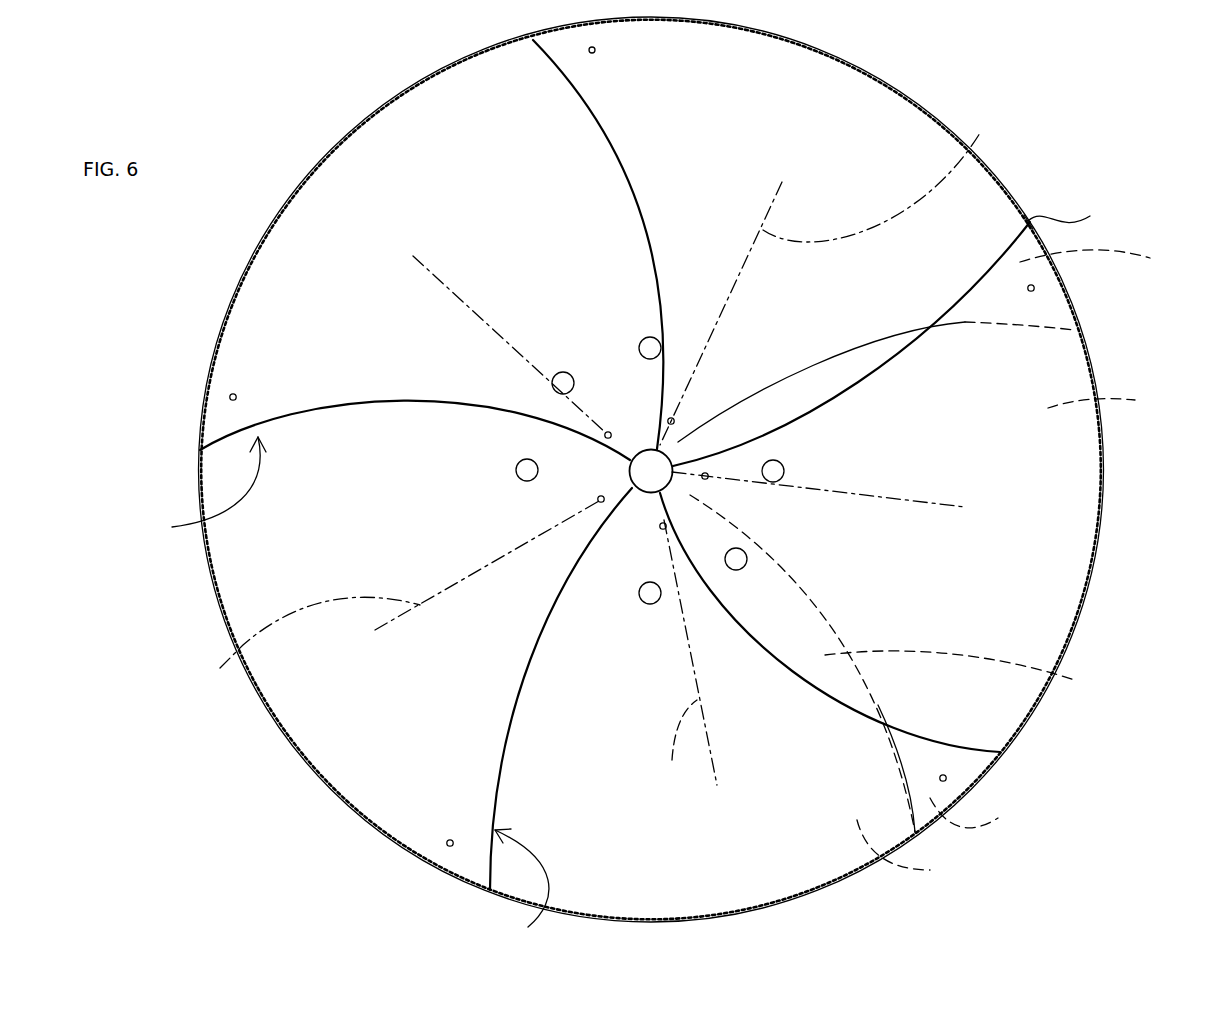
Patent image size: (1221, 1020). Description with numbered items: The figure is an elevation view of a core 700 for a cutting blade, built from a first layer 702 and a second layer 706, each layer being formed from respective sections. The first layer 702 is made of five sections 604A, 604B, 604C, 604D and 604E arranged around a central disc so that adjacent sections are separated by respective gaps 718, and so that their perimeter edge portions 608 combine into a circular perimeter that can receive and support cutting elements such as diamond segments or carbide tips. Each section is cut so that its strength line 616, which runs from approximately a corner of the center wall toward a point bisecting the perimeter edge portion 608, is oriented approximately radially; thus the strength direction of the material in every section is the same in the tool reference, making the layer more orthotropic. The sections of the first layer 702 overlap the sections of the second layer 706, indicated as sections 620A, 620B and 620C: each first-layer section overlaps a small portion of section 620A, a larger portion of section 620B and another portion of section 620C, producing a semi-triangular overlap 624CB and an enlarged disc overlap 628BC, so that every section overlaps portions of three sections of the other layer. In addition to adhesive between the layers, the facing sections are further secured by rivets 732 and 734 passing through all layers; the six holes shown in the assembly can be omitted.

The core 700 is at (296, 165).
The first layer 702 is at (296, 278).
The section 604A is at (845, 100).
The section 604B is at (1048, 503).
The section 604C is at (833, 845).
The section 604D is at (278, 586).
The section 604E is at (397, 155).
The perimeter edge portion 608 is at (300, 762).
The strength line 616 is at (596, 455).
The section of second layer 620A is at (1117, 265).
The section of second layer 620B is at (1079, 369).
The section of second layer 620C is at (922, 853).
The semi-triangular overlap 624CB is at (1003, 818).
The enlarged disc overlap 628BC is at (989, 674).
The second layer 706 is at (998, 170).
The gap 718 is at (627, 571).
The rivet 732 is at (233, 397).
The rivet 734 is at (608, 432).